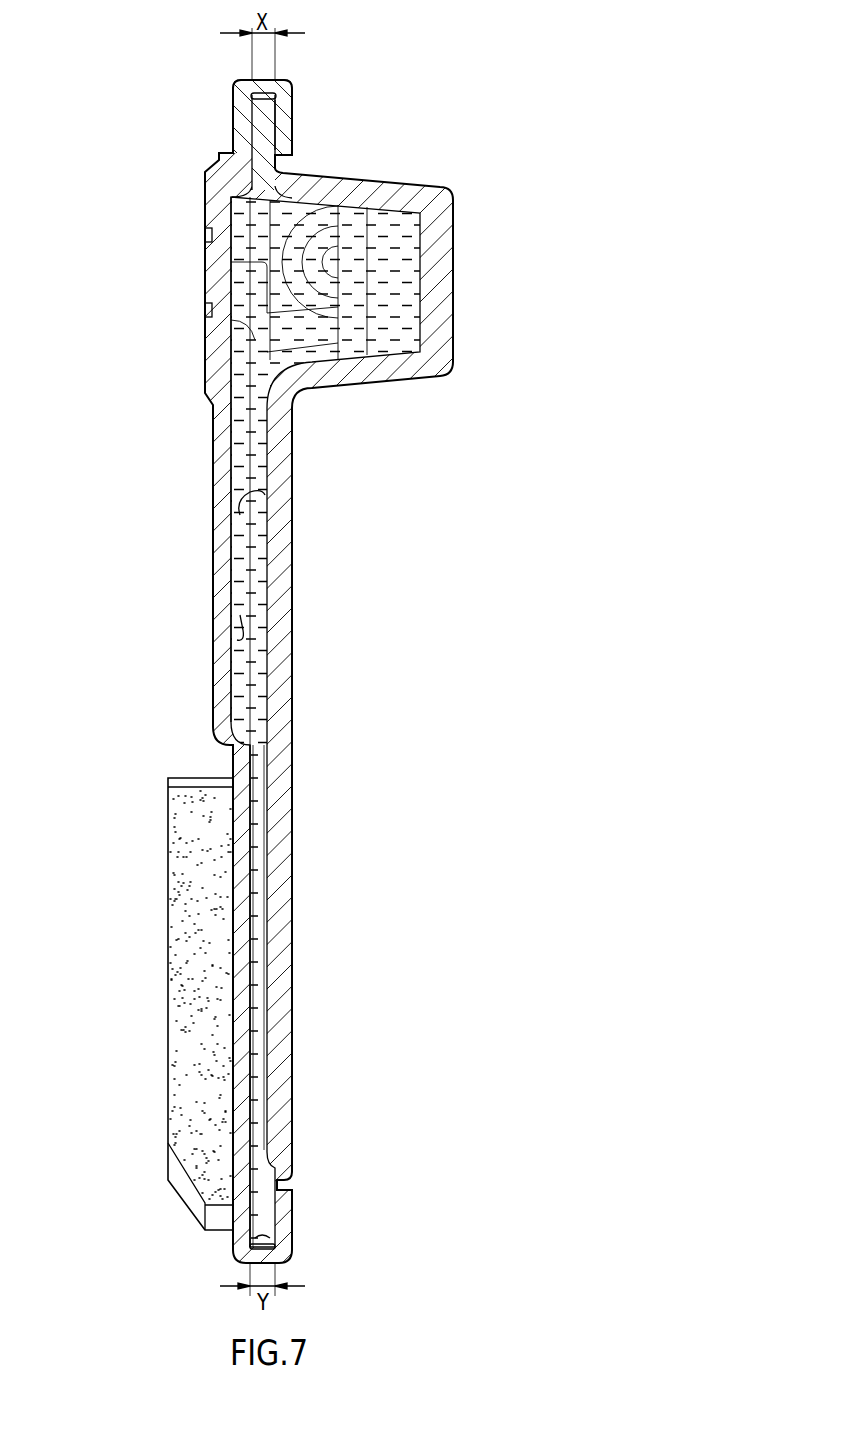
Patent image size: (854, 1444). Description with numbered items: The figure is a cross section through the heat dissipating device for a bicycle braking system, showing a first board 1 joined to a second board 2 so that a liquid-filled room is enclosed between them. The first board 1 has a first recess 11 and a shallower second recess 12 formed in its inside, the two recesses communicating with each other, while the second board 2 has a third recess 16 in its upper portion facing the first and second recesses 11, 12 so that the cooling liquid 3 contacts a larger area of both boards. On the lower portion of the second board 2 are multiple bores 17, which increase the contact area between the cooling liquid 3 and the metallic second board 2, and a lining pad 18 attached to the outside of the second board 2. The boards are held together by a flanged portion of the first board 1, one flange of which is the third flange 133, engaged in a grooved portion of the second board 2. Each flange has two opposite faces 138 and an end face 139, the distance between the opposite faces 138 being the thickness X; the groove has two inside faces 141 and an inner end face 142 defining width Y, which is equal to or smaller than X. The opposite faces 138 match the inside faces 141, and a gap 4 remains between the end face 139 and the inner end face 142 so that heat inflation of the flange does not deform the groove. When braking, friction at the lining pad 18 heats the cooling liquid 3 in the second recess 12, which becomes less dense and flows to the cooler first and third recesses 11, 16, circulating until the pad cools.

The first board 1 is at (304, 883).
The second board 2 is at (188, 531).
The cooling liquid 3 is at (252, 231).
The gap 4 is at (262, 1237).
The first recess 11 is at (352, 278).
The second recess 12 is at (240, 515).
The third recess 16 is at (237, 640).
The bores 17 is at (266, 1088).
The lining pad 18 is at (180, 990).
The third flange 133 is at (258, 1218).
The opposite faces 138 is at (277, 120).
The end face 139 is at (278, 82).
The inside faces 141 is at (250, 135).
The inner end face 142 is at (258, 102).